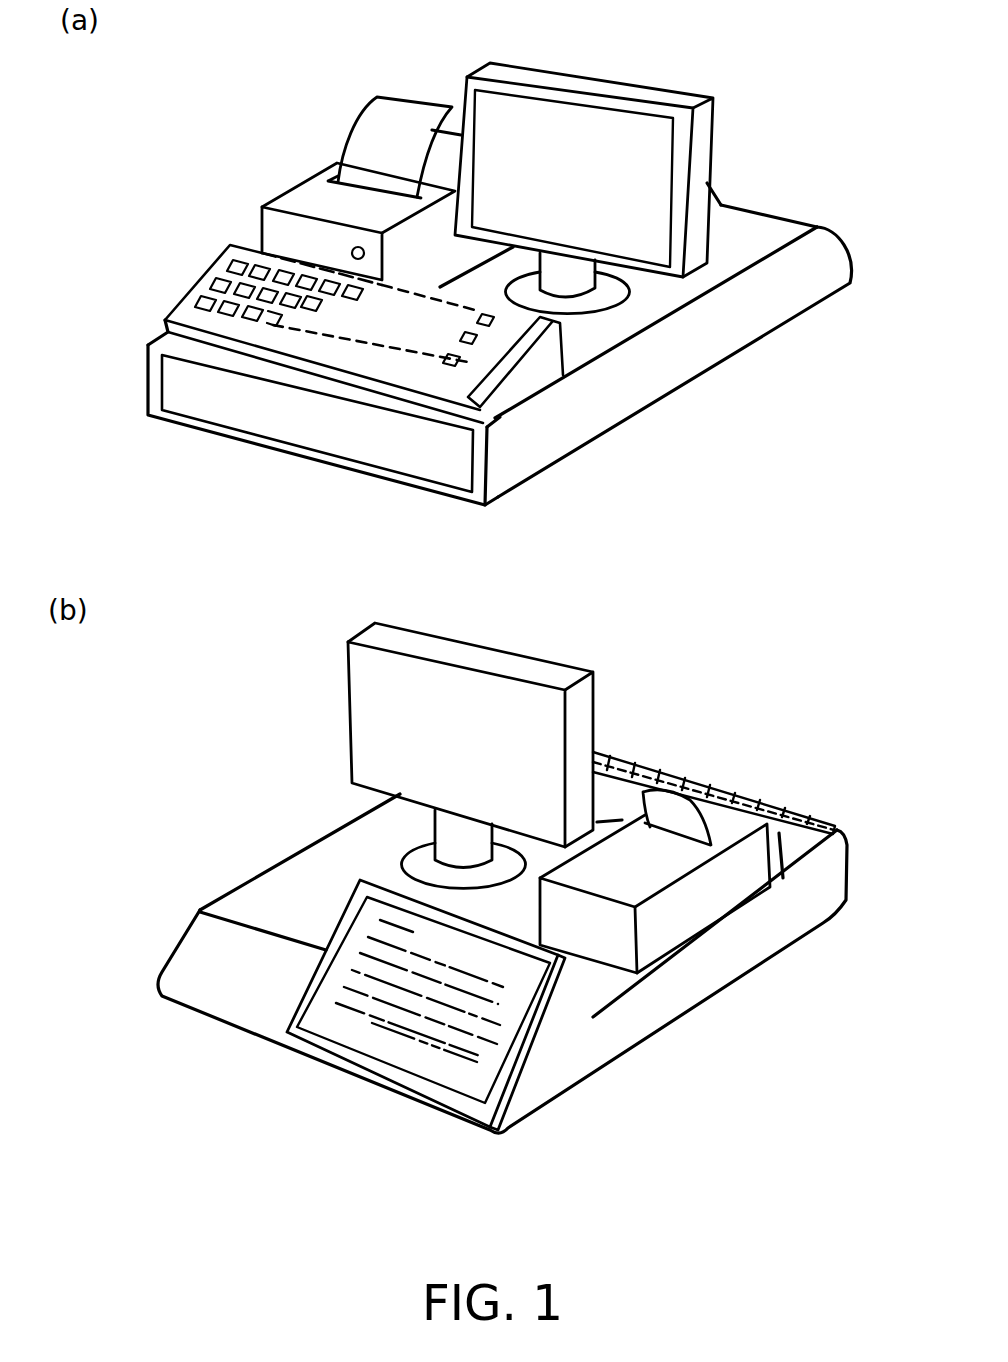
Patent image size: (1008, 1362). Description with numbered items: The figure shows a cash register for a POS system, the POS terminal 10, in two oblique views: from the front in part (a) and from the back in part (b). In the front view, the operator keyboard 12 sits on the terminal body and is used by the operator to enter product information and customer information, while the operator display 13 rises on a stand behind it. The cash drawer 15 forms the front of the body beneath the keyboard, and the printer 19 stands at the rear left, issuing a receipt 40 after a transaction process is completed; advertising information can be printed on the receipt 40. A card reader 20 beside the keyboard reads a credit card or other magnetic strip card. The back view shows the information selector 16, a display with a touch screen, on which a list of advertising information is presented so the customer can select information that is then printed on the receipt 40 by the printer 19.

The POS terminal 10 is at (707, 370).
The operator keyboard 12 is at (202, 277).
The operator display 13 is at (602, 90).
The cash drawer 15 is at (280, 422).
The information selector 16 is at (365, 1042).
The printer 19 is at (302, 193).
The card reader 20 is at (530, 360).
The receipt 40 is at (410, 107).